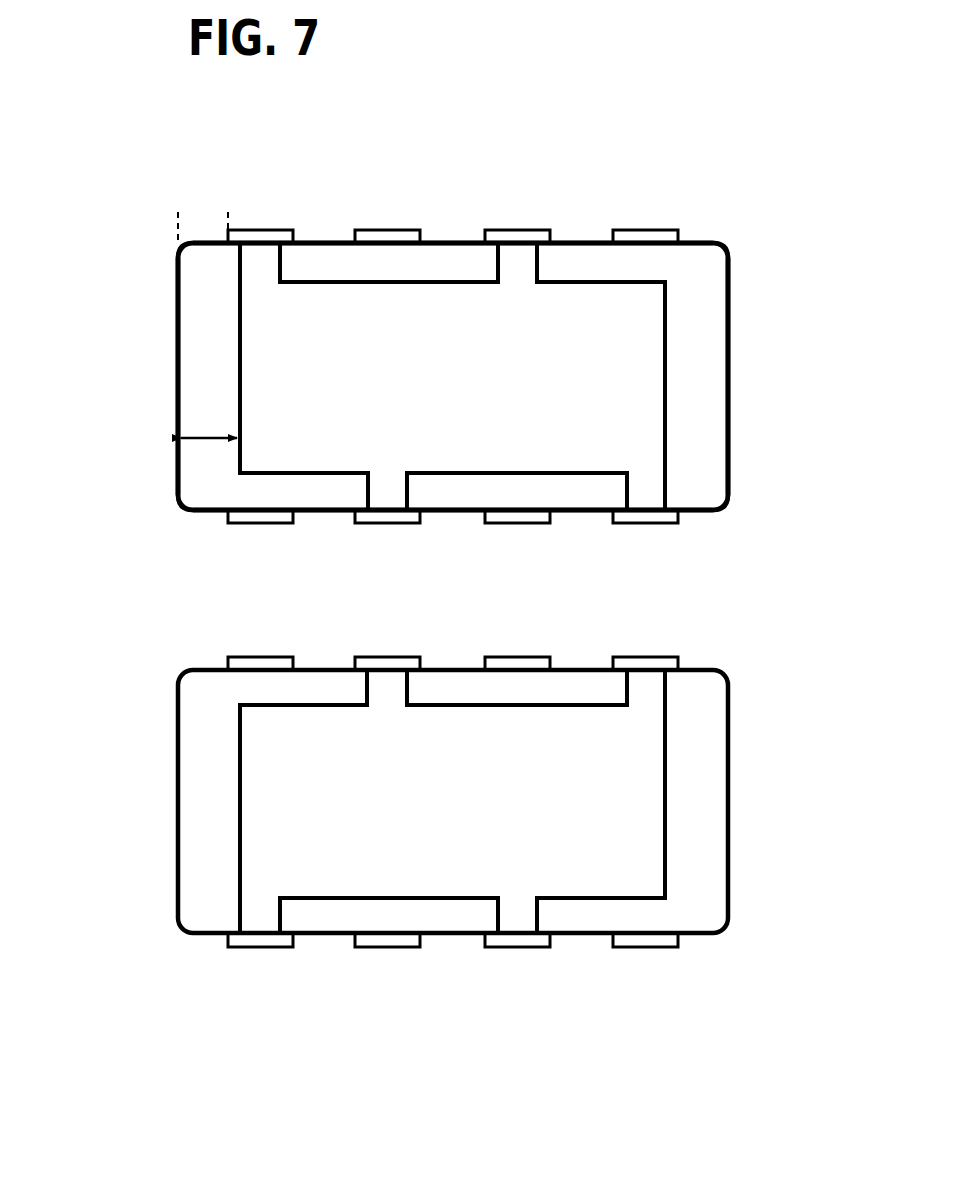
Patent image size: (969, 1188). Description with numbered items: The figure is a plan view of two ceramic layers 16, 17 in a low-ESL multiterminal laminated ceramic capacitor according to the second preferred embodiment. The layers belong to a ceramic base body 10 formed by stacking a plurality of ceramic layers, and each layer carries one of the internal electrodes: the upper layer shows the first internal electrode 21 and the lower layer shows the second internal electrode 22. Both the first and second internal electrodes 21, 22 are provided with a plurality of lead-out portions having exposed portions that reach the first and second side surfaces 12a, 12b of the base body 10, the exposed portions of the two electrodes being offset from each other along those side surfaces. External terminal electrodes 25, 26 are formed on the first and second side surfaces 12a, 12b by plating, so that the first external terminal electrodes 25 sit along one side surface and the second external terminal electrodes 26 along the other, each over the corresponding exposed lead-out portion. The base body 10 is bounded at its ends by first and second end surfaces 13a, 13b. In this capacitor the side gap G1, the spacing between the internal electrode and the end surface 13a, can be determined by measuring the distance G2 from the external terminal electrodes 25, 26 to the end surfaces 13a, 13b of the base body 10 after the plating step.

The ceramic base body 10 is at (170, 307).
The first side surface 12a is at (582, 240).
The second side surface 12b is at (455, 513).
The first end surface 13a is at (177, 348).
The second end surface 13b is at (728, 355).
The ceramic layer 16 is at (713, 292).
The ceramic layer 17 is at (713, 745).
The first internal electrode 21 is at (637, 418).
The second internal electrode 22 is at (637, 843).
The first external terminal electrode 25 is at (273, 230).
The second external terminal electrode 26 is at (258, 527).
The side gap G1 is at (207, 443).
The distance G2 is at (270, 198).